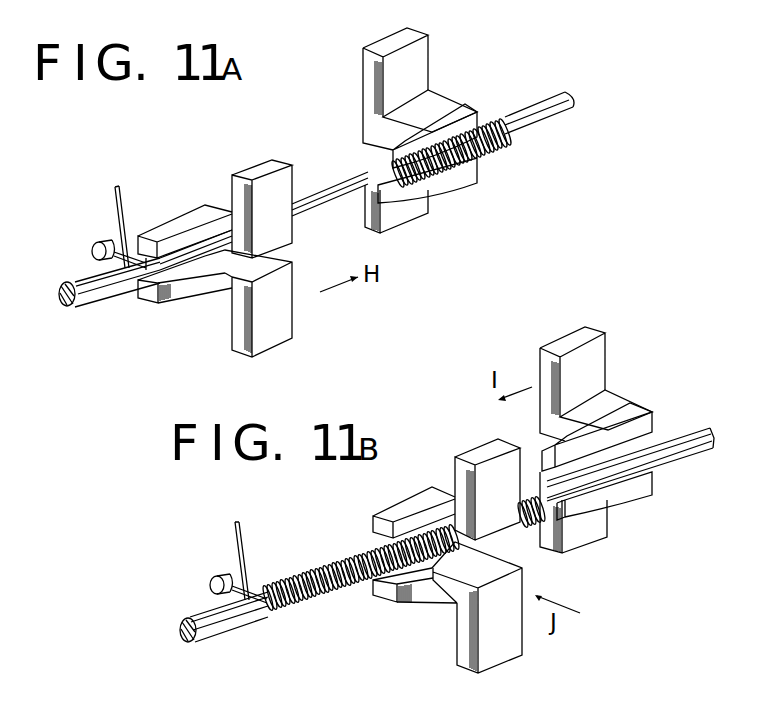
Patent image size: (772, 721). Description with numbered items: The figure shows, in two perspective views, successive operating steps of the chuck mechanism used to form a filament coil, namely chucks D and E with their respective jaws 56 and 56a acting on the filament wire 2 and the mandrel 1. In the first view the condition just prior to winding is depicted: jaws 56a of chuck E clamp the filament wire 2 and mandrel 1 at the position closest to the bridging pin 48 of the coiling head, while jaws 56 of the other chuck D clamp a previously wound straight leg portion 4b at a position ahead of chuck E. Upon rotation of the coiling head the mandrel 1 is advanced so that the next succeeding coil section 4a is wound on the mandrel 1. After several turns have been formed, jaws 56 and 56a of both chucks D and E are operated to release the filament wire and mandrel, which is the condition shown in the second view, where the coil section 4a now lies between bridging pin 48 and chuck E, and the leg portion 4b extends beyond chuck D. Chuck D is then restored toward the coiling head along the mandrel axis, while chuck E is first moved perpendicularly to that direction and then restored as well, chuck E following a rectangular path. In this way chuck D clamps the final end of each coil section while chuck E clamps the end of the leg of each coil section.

In FIG. 11A, the mandrel 1 is at (93, 301).
In FIG. 11B, the mandrel 1 is at (241, 620).
In FIG. 11A, the filament wire 2 is at (122, 197).
In FIG. 11B, the filament wire 2 is at (241, 527).
In FIG. 11A, the bridging pin 48 is at (94, 258).
In FIG. 11B, the bridging pin 48 is at (215, 593).
In FIG. 11B, the coil section 4a is at (328, 563).
In FIG. 11A, the straight leg portion 4b is at (334, 181).
In FIG. 11B, the straight leg portion 4b is at (677, 433).
In FIG. 11A, the jaws of chuck D 56 is at (467, 174).
In FIG. 11B, the jaws of chuck D 56 is at (633, 496).
In FIG. 11A, the jaws of chuck E 56a is at (165, 293).
In FIG. 11B, the jaws of chuck E 56a is at (402, 598).
In FIG. 11A, the chuck D is at (386, 38).
In FIG. 11B, the chuck D is at (570, 338).
In FIG. 11A, the chuck E is at (247, 165).
In FIG. 11B, the chuck E is at (535, 654).